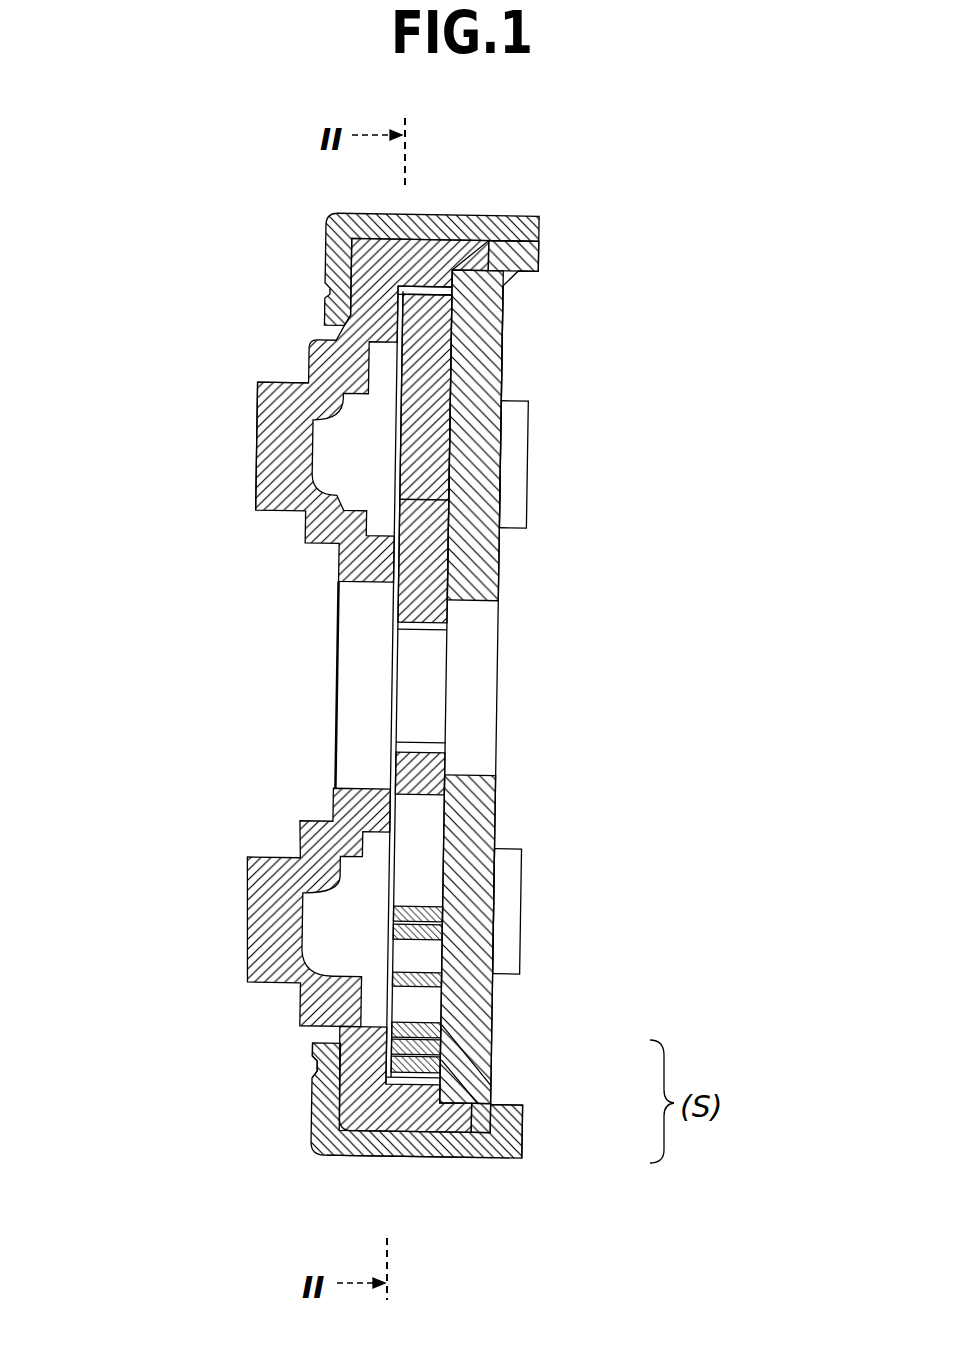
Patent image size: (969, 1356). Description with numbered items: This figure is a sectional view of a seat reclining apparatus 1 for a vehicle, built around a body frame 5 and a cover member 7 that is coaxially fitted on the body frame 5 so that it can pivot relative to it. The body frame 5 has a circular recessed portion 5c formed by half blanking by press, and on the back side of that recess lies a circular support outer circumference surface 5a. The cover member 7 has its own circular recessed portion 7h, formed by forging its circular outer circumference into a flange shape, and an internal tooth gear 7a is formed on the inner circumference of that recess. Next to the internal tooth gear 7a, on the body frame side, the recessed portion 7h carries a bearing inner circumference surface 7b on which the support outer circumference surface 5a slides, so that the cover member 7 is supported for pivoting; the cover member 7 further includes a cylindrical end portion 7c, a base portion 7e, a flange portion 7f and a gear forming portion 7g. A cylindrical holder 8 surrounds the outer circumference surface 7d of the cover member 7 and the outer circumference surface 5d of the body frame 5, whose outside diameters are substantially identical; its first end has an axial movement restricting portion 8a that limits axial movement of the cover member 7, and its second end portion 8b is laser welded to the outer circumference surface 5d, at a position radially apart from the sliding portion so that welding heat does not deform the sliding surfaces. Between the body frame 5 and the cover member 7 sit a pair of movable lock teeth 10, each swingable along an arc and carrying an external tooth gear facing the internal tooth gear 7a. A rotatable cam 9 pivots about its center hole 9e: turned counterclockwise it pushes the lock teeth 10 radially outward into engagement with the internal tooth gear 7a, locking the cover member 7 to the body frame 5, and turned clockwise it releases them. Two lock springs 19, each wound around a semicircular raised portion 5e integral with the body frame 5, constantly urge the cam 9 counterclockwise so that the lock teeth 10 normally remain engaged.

The seat reclining apparatus 1 is at (632, 790).
The body frame 5 is at (503, 300).
The support outer circumference surface 5a is at (480, 1124).
The circular recessed portion 5c is at (503, 340).
The outer circumference surface 5d is at (487, 1150).
The raised portion 5e is at (297, 1030).
The cover member 7 is at (305, 356).
The internal tooth gear 7a is at (419, 296).
The bearing inner circumference surface 7b is at (462, 1080).
The cylindrical end portion 7c is at (465, 1150).
The outer circumference surface 7d is at (443, 1150).
The base portion 7e is at (255, 427).
The flange portion 7f is at (368, 1155).
The gear forming portion 7g is at (388, 1150).
The circular recessed portion 7h is at (399, 322).
The holder 8 is at (365, 1158).
The axial movement restricting portion 8a is at (310, 1097).
The second end portion 8b is at (510, 1150).
The cam 9 is at (497, 573).
The center hole 9e is at (427, 682).
The lock teeth 10 is at (455, 440).
The lock springs 19 is at (423, 975).